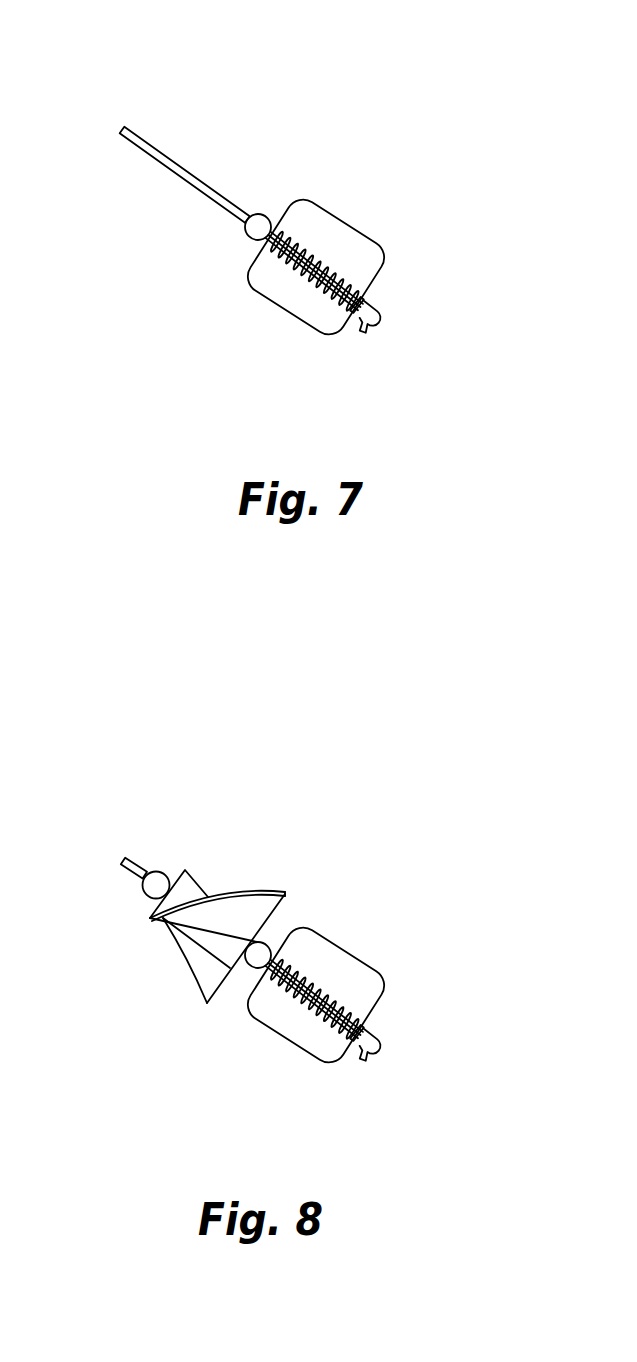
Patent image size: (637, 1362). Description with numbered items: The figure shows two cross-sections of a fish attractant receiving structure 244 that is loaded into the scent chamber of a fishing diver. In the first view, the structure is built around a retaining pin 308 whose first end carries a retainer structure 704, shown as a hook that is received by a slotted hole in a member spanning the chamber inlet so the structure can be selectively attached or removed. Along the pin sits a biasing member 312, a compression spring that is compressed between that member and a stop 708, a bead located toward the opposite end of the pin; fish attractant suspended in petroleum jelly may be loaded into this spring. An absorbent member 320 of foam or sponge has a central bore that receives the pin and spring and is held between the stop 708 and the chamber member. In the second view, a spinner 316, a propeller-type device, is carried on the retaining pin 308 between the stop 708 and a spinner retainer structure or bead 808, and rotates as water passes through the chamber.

In FIG. 7, the fish attractant receiving structure 244 is at (307, 248).
In FIG. 7, the retaining pin 308 is at (153, 143).
In FIG. 8, the retaining pin 308 is at (123, 857).
In FIG. 7, the biasing member 312 is at (290, 267).
In FIG. 8, the biasing member 312 is at (308, 1010).
In FIG. 8, the spinner 316 is at (250, 888).
In FIG. 7, the absorbent member 320 is at (386, 249).
In FIG. 8, the absorbent member 320 is at (384, 975).
In FIG. 7, the retainer structure 704 is at (378, 333).
In FIG. 8, the retainer structure 704 is at (377, 1043).
In FIG. 7, the stop 708 is at (245, 229).
In FIG. 8, the stop 708 is at (288, 938).
In FIG. 8, the spinner retainer structure 808 is at (149, 896).